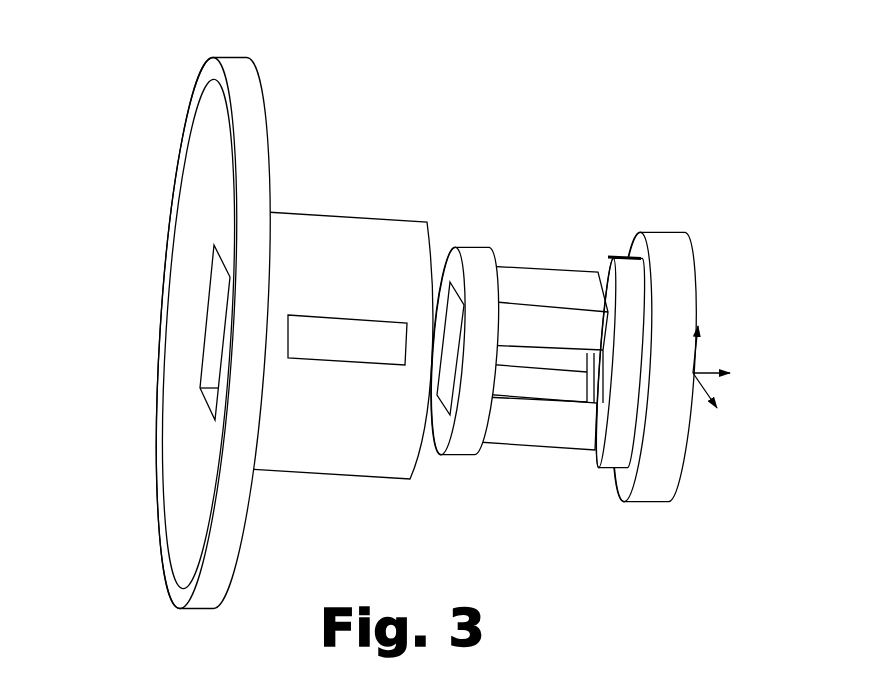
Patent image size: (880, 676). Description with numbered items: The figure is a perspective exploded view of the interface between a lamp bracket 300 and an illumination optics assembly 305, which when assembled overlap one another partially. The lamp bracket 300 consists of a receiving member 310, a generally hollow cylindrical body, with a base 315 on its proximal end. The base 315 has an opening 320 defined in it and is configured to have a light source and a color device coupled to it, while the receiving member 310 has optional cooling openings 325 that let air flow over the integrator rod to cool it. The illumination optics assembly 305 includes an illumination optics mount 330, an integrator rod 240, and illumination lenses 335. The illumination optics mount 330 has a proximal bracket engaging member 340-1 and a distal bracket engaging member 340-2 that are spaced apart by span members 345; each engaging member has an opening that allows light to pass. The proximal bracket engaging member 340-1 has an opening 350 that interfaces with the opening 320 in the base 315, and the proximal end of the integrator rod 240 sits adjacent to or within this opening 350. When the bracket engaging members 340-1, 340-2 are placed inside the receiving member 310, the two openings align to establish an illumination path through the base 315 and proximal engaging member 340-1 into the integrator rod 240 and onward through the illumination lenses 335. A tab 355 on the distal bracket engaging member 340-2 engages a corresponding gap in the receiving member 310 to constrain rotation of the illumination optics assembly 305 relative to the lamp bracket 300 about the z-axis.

The lamp bracket 300 is at (185, 47).
The illumination optics assembly 305 is at (677, 202).
The receiving member 310 is at (323, 477).
The base 315 is at (182, 612).
The opening 320 is at (213, 355).
The cooling openings 325 is at (328, 315).
The illumination optics mount 330 is at (563, 538).
The illumination lenses 335 is at (682, 264).
The proximal bracket engaging member 340-1 is at (473, 250).
The distal bracket engaging member 340-2 is at (599, 467).
The span members 345 is at (550, 275).
The opening 350 is at (439, 389).
The tab 355 is at (627, 257).
The integrator rod 240 is at (535, 370).